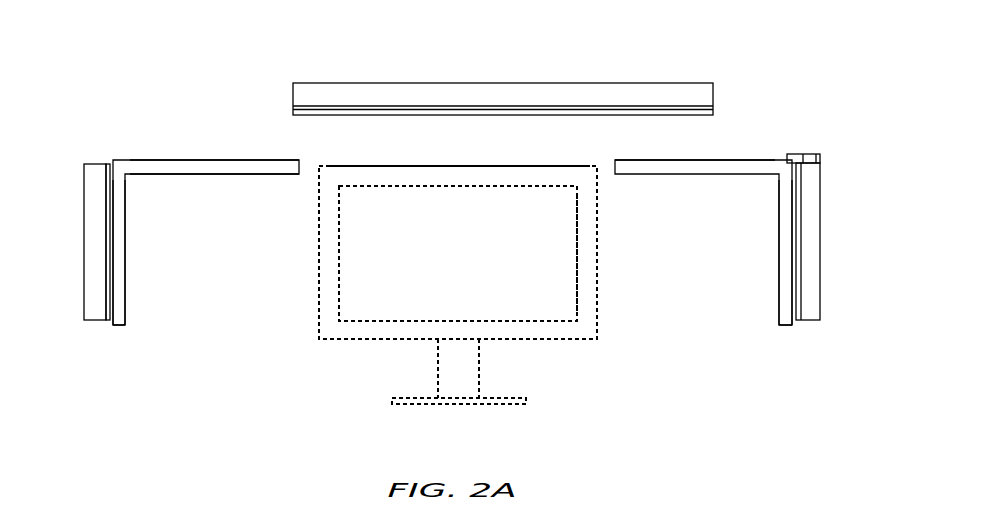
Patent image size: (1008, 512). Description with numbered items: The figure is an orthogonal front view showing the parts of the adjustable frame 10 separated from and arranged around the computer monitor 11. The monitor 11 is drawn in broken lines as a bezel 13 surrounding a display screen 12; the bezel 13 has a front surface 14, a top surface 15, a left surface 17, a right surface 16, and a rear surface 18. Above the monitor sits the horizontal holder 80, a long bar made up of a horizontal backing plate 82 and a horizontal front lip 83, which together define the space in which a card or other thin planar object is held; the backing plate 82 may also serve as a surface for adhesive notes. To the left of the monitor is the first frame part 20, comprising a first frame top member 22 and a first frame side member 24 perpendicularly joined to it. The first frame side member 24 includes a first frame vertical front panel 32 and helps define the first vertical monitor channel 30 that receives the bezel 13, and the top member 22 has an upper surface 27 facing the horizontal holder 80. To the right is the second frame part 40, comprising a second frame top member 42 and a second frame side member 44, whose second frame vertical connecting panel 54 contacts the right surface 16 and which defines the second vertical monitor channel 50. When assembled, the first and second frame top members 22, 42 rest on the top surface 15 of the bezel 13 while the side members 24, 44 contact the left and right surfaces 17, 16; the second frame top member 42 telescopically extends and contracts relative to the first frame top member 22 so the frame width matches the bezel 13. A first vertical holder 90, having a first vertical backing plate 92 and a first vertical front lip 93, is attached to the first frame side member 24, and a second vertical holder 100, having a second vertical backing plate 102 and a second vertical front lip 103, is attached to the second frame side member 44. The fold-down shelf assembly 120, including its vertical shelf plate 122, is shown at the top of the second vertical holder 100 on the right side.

The adjustable frame 10 is at (677, 53).
The computer monitor 11 is at (574, 374).
The display screen 12 is at (347, 218).
The bezel 13 is at (597, 340).
The front surface 14 is at (590, 250).
The top surface 15 is at (515, 166).
The right surface 16 is at (600, 293).
The left surface 17 is at (320, 315).
The rear surface 18 is at (600, 199).
The first frame part 20 is at (150, 160).
The first frame top member 22 is at (190, 163).
The first frame side member 24 is at (125, 325).
The upper surface of left bracket arm 27 is at (222, 163).
The first vertical monitor channel 30 is at (127, 266).
The first frame vertical front panel 32 is at (124, 293).
The second frame part 40 is at (745, 158).
The second frame top member 42 is at (720, 168).
The second frame side member 44 is at (787, 328).
The second vertical monitor channel 50 is at (779, 285).
The second frame vertical connecting panel 54 is at (787, 310).
The horizontal holder 80 is at (293, 85).
The horizontal backing plate 82 is at (320, 92).
The horizontal front lip 83 is at (360, 110).
The first vertical holder 90 is at (85, 165).
The first vertical backing plate 92 is at (95, 187).
The first vertical front lip 93 is at (108, 205).
The second vertical holder 100 is at (815, 325).
The second vertical backing plate 102 is at (815, 295).
The second vertical front lip 103 is at (797, 267).
The fold-down shelf assembly 120 is at (805, 125).
The vertical shelf plate 122 is at (815, 175).